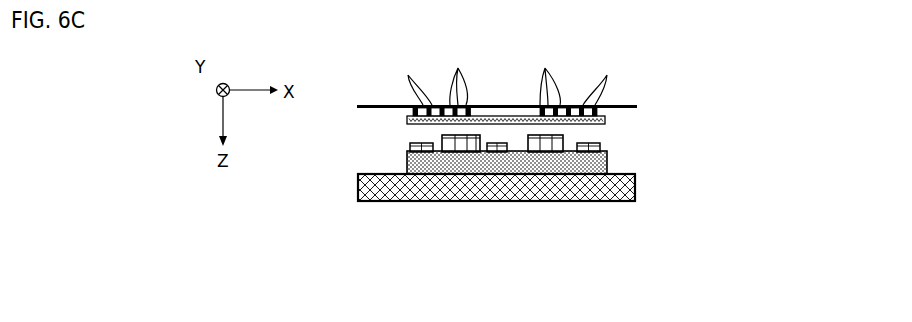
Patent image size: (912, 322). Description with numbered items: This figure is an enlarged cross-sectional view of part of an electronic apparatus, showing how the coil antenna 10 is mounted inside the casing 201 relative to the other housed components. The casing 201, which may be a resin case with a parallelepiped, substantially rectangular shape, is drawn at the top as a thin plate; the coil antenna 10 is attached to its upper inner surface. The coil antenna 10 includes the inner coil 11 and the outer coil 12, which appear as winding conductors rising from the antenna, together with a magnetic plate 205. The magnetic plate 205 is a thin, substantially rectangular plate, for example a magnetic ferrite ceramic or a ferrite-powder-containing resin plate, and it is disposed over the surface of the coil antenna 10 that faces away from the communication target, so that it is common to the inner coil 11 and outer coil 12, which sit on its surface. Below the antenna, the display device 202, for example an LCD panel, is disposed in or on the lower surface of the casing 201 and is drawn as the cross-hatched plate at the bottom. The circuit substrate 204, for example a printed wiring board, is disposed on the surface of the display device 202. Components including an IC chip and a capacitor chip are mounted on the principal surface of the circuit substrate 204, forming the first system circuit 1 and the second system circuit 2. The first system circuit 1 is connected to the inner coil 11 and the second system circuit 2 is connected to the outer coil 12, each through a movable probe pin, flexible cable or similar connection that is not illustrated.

The coil antenna 10 is at (499, 88).
The inner coil 11 is at (505, 73).
The outer coil 12 is at (505, 77).
The casing 201 is at (636, 105).
The magnetic plate 205 is at (597, 125).
The circuit substrate 204 is at (517, 165).
The display device 202 is at (385, 186).
The first system circuit 1 is at (493, 150).
The second system circuit 2 is at (588, 150).